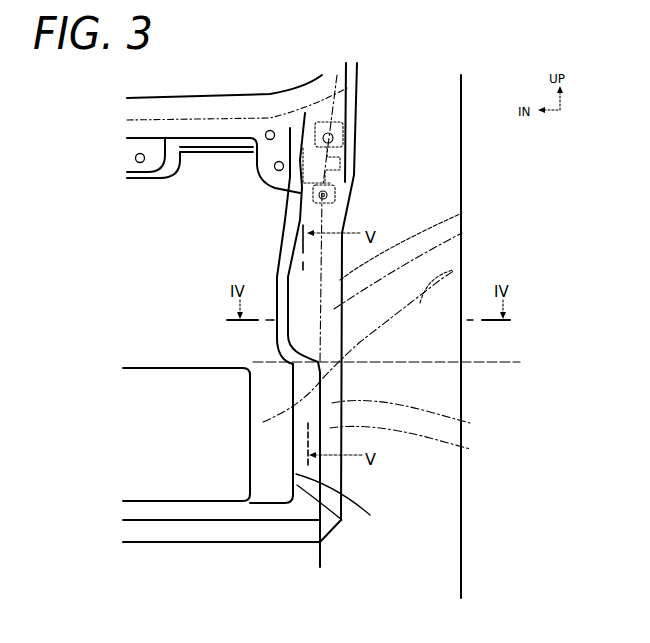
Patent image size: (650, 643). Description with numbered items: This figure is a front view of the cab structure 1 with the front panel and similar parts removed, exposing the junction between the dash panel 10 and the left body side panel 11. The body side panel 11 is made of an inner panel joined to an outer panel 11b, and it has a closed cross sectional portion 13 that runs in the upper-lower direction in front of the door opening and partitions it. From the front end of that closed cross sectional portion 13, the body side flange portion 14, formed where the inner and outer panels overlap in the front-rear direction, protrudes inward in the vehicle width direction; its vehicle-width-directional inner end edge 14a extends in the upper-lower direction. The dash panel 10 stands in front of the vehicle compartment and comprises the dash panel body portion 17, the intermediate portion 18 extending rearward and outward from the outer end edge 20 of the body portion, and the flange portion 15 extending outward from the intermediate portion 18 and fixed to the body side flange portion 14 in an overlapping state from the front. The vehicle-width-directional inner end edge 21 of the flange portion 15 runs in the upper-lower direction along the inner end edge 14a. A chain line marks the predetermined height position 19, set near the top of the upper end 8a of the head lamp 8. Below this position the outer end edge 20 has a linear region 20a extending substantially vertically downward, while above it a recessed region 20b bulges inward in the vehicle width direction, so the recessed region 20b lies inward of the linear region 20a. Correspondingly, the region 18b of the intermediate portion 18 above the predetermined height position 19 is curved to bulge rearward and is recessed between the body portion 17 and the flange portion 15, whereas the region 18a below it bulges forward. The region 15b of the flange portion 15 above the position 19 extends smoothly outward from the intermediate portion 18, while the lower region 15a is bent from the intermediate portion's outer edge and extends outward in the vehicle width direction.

The vehicle side structure 1 is at (571, 152).
The head lamp 8 is at (436, 286).
The upper end of the head lamp 8a is at (453, 270).
The dash panel 10 is at (223, 551).
The body side panel 11 is at (470, 152).
The outer panel 11b is at (467, 404).
The closed cross sectional portion 13 is at (443, 387).
The body side flange portion 14 is at (242, 302).
The vehicle-width-directional inner end edge of the body side flange portion 14a is at (277, 275).
The flange portion 15 is at (470, 449).
The region of the flange portion extending downward 15a is at (470, 423).
The region of the flange portion extending upward 15b is at (462, 233).
The dash panel body portion 17 is at (177, 313).
The intermediate portion 18 is at (310, 387).
The region of the intermediate portion extending downward 18a is at (310, 373).
The region of the intermediate portion extending upward 18b is at (275, 323).
The predetermined height position 19 is at (500, 362).
The outer end edge 20 is at (342, 520).
The linear region 20a is at (370, 515).
The recessed region 20b is at (462, 213).
The vehicle-width-directional inner end edge of the flange portion 21 is at (263, 422).